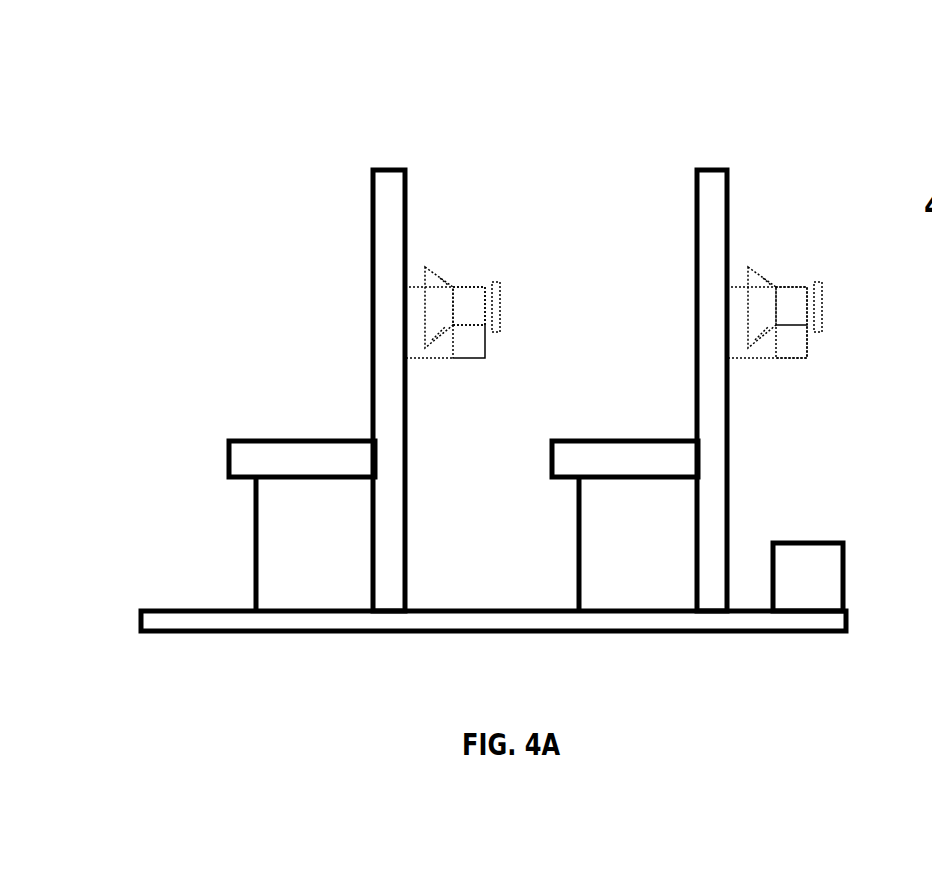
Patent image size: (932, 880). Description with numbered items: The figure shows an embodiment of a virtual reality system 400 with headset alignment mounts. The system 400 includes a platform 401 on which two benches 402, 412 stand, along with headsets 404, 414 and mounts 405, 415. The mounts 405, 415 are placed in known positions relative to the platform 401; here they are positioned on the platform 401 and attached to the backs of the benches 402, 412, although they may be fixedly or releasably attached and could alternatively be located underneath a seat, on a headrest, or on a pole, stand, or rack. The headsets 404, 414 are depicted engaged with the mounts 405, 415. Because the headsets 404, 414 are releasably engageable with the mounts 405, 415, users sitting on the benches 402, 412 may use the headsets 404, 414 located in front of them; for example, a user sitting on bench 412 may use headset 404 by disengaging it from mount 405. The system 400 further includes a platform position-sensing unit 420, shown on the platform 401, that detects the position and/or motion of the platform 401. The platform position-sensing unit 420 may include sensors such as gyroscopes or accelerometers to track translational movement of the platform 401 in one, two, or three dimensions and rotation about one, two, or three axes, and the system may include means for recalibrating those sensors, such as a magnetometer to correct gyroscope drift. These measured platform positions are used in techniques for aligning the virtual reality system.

The virtual reality system 400 is at (477, 40).
The platform 401 is at (297, 126).
The bench 402 is at (392, 170).
The headset 404 is at (473, 287).
The mount 405 is at (473, 355).
The bench 412 is at (712, 172).
The headset 414 is at (769, 280).
The mount 415 is at (762, 357).
The platform position-sensing unit 420 is at (843, 578).